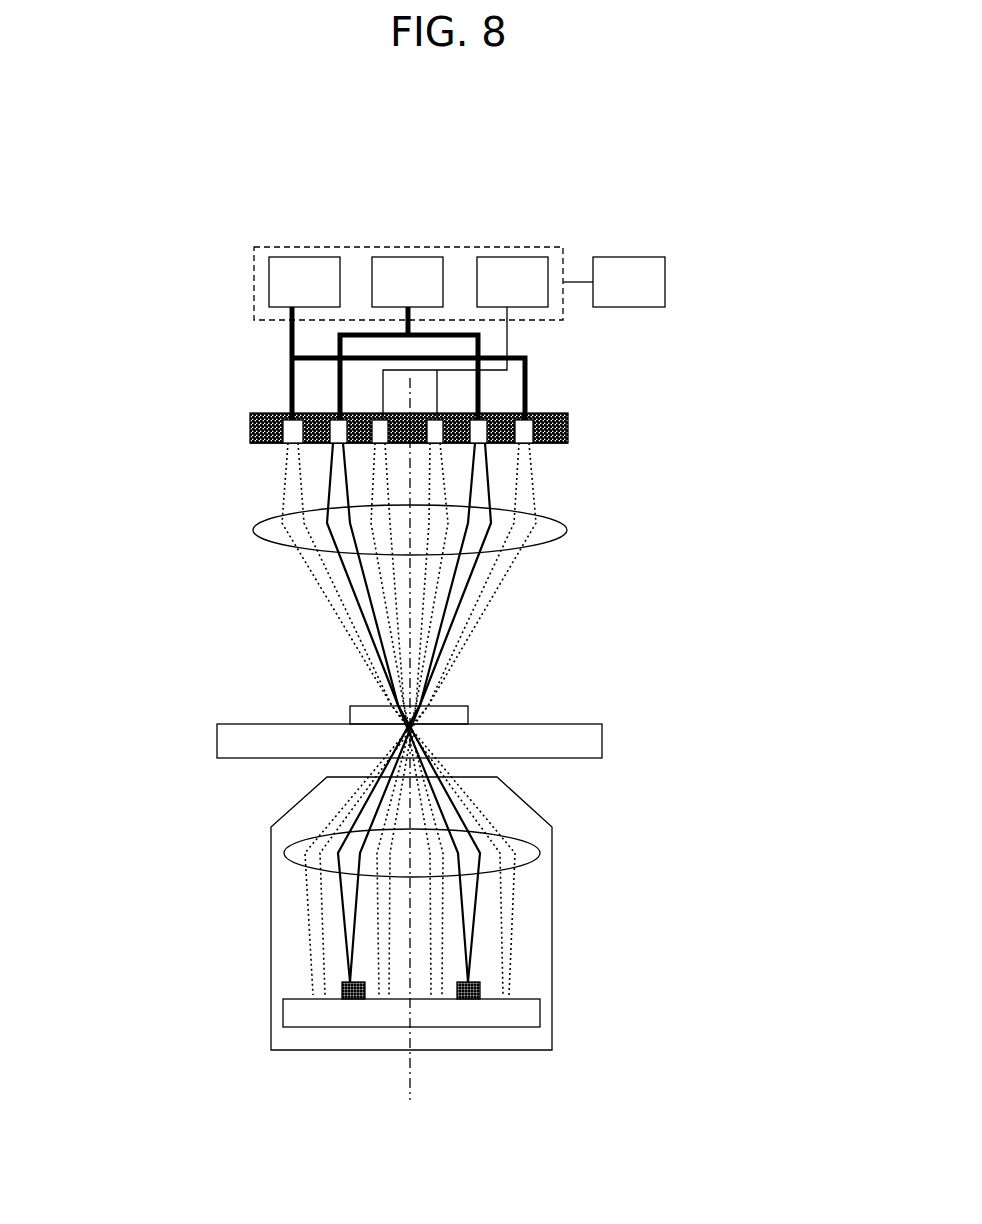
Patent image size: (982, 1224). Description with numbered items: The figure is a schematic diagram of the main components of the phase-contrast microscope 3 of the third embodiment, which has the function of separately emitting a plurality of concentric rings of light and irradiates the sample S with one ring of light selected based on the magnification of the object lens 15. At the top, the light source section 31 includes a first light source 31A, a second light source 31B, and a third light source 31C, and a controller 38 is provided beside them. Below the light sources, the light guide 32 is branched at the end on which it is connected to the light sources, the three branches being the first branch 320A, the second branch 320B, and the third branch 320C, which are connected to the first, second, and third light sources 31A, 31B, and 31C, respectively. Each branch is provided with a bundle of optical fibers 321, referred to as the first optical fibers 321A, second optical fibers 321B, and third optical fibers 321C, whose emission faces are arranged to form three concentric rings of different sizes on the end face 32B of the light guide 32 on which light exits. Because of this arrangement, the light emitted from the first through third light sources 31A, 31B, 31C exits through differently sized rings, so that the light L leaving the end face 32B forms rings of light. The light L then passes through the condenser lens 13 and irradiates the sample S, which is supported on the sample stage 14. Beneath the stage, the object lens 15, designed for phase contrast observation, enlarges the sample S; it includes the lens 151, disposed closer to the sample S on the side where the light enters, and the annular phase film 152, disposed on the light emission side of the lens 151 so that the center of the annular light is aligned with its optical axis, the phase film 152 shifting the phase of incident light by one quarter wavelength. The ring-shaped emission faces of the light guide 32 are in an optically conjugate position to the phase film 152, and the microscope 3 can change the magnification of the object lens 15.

The phase-contrast microscope 3 is at (218, 226).
The light source section 31 is at (555, 247).
The first light source 31A is at (304, 257).
The second light source 31B is at (402, 257).
The third light source 31C is at (498, 257).
The controller 38 is at (665, 283).
The first branch 320A is at (278, 337).
The second branch 320B is at (422, 325).
The third branch 320C is at (520, 341).
The light guide 32 is at (232, 412).
The end face 32B is at (552, 445).
The optical fibers 321 is at (413, 509).
The first optical fibers 321A is at (292, 435).
The second optical fibers 321B is at (515, 433).
The third optical fibers 321C is at (443, 432).
The light L is at (280, 487).
The condenser lens 13 is at (255, 530).
The sample S is at (350, 715).
The sample stage 14 is at (217, 743).
The lens 151 is at (283, 852).
The annular phase film 152 is at (342, 990).
The object lens 15 is at (283, 1025).